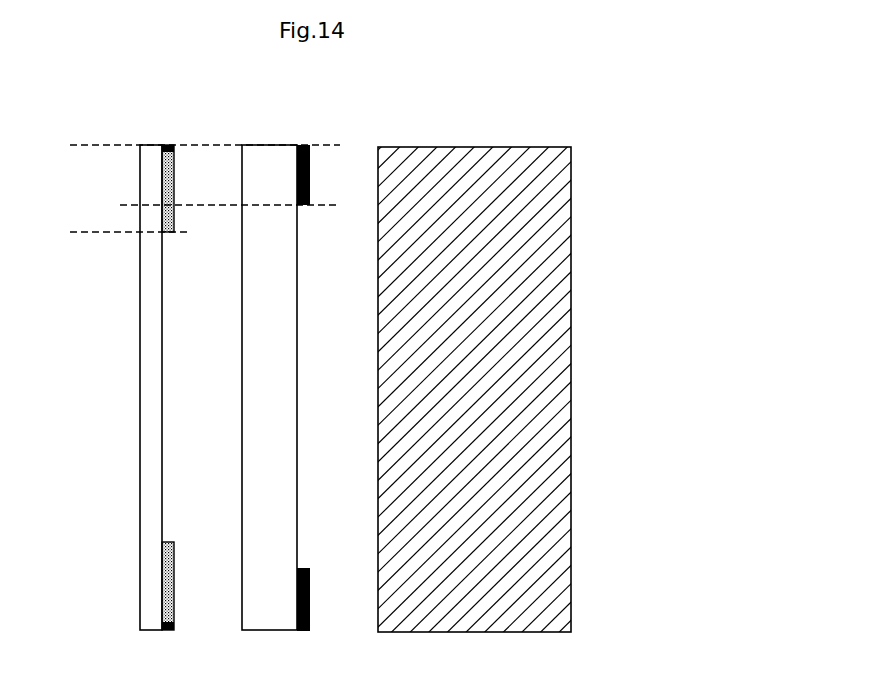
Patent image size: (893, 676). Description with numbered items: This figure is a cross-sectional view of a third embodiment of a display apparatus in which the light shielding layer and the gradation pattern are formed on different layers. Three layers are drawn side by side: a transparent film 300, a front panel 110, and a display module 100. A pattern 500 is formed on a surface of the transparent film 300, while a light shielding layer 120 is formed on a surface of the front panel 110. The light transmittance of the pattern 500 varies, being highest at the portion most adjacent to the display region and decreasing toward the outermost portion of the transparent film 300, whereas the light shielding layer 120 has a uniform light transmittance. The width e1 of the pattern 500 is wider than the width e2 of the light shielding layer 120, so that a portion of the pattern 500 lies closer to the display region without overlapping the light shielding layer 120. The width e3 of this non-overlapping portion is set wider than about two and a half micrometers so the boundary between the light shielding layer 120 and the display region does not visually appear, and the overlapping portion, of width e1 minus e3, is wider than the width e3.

The display module 100 is at (478, 158).
The front panel 110 is at (267, 152).
The light shielding layer 120 is at (303, 208).
The transparent film 300 is at (147, 144).
The pattern 500 is at (174, 168).
The width of pattern e1 is at (80, 152).
The width of light shielding layer e2 is at (327, 152).
The width of non-overlapping portion of pattern e3 is at (128, 177).